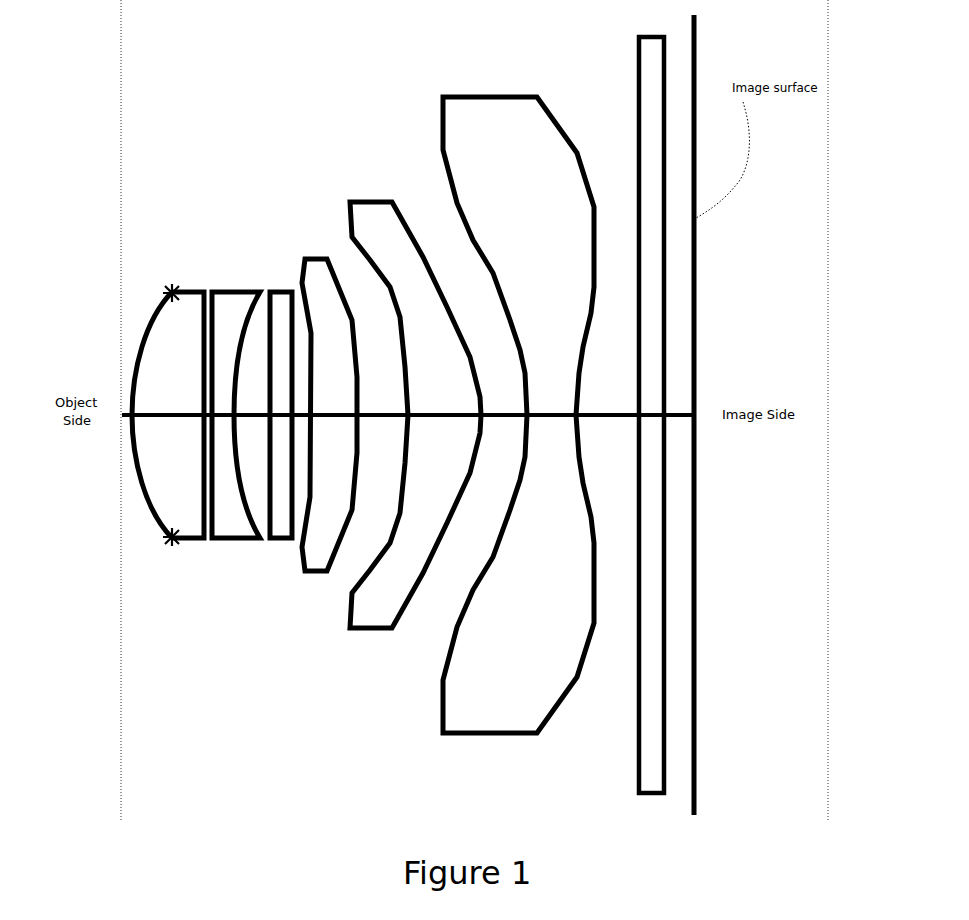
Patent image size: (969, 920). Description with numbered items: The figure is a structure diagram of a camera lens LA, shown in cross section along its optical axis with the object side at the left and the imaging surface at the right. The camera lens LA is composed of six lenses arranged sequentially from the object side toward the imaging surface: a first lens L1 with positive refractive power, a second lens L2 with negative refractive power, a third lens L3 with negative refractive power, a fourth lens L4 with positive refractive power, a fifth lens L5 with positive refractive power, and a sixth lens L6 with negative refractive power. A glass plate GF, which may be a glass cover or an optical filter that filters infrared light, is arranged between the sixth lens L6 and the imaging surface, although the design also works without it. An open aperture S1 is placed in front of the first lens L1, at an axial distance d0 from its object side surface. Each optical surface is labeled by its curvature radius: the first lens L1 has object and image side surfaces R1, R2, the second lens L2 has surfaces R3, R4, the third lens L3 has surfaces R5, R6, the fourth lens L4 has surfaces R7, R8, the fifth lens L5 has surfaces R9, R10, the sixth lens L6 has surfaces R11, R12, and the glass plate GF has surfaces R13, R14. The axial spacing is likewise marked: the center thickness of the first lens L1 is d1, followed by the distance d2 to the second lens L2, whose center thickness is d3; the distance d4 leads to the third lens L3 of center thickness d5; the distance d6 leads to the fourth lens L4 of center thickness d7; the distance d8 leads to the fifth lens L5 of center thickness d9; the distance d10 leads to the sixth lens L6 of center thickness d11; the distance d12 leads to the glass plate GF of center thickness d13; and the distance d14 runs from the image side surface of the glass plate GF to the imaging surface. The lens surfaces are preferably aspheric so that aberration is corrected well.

The camera lens LA is at (162, 136).
The first lens L1 is at (168, 415).
The second lens L2 is at (236, 415).
The third lens L3 is at (281, 415).
The fourth lens L4 is at (329, 415).
The fifth lens L5 is at (415, 415).
The sixth lens L6 is at (518, 415).
The glass plate GF is at (651, 406).
The open aperture S1 is at (173, 290).
The curvature radius of the first lens's object side surface R1 is at (132, 433).
The curvature radius of the first lens's image side surface R2 is at (203, 428).
The curvature radius of the second lens's object side surface R3 is at (211, 445).
The curvature radius of the second lens's image side surface R4 is at (235, 427).
The curvature radius of the third lens's object side surface R5 is at (271, 430).
The curvature radius of the third lens's image side surface R6 is at (292, 430).
The curvature radius of the fourth lens's object side surface R7 is at (310, 433).
The curvature radius of the fourth lens's image side surface R8 is at (355, 440).
The curvature radius of the fifth lens's object side surface R9 is at (405, 480).
The curvature radius of the fifth lens's image side surface R10 is at (468, 470).
The curvature radius of the sixth lens's object side surface R11 is at (478, 455).
The curvature radius of the sixth lens's image side surface R12 is at (535, 490).
The curvature radius of the glass plate's object side surface R13 is at (640, 470).
The curvature radius of the glass plate's image side surface R14 is at (665, 500).
The axial distance from open aperture to object side surface of the first lens d0 is at (133, 395).
The center thickness of the first lens d1 is at (165, 402).
The axial distance from first lens to second lens d2 is at (208, 410).
The center thickness of the second lens d3 is at (219, 402).
The axial distance from second lens to third lens d4 is at (254, 402).
The center thickness of the third lens d5 is at (281, 410).
The axial distance from third lens to fourth lens d6 is at (302, 410).
The center thickness of the fourth lens d7 is at (334, 402).
The axial distance from fourth lens to fifth lens d8 is at (376, 402).
The center thickness of the fifth lens d9 is at (442, 402).
The axial distance from fifth lens to sixth lens d10 is at (497, 402).
The center thickness of the sixth lens d11 is at (547, 402).
The axial distance from sixth lens to glass plate d12 is at (605, 402).
The center thickness of glass plate d13 is at (653, 412).
The axial distance from glass plate to imaging surface d14 is at (674, 412).